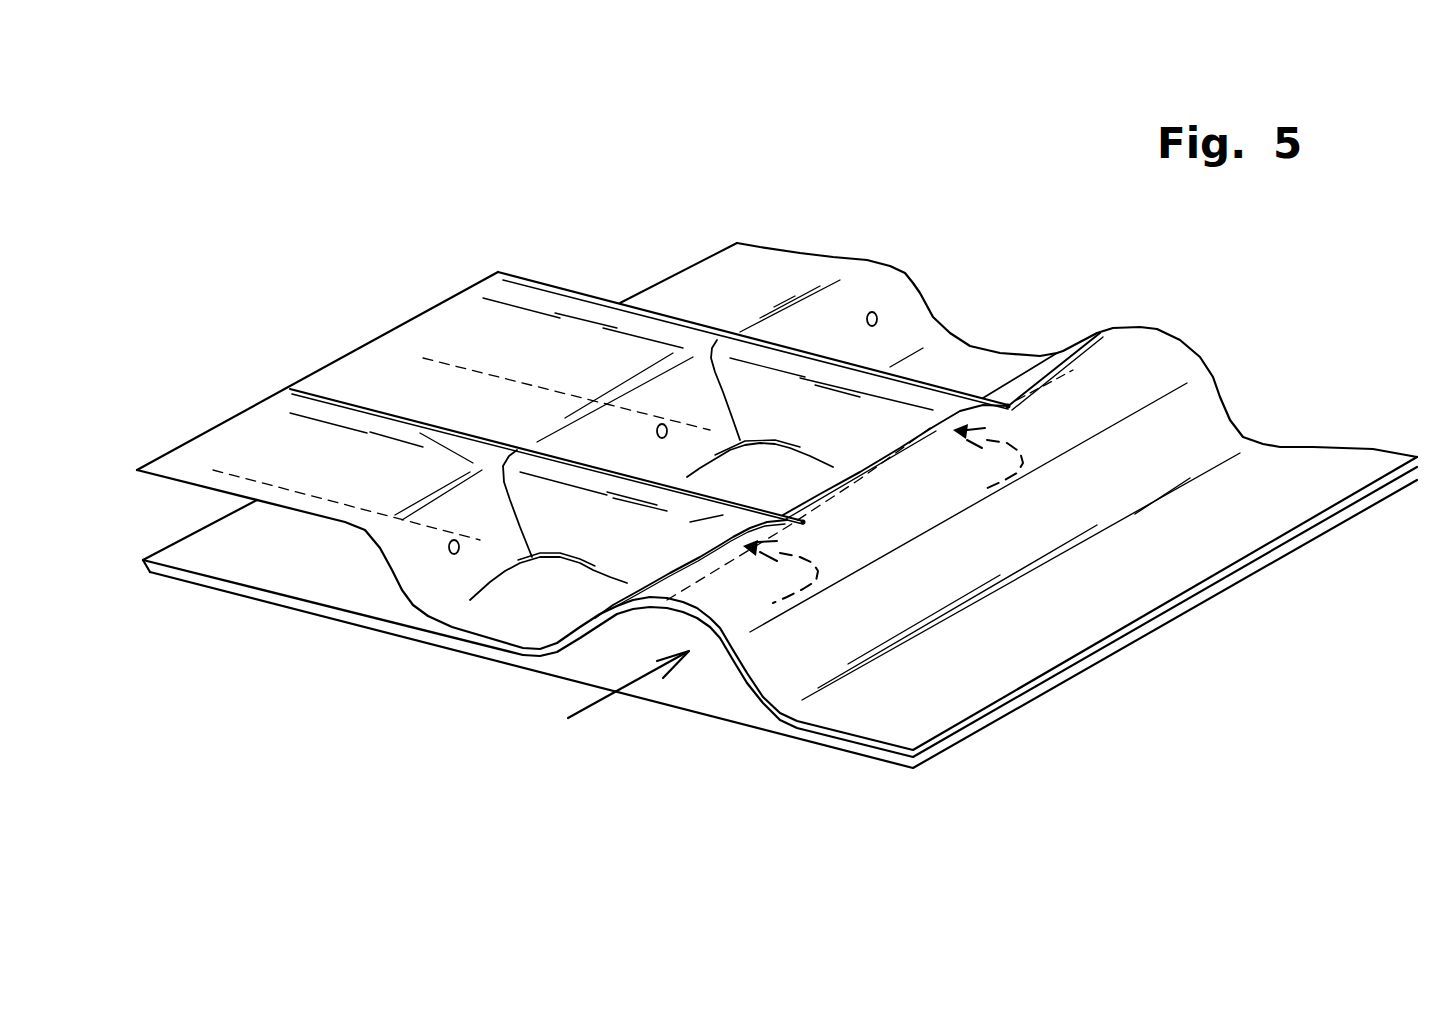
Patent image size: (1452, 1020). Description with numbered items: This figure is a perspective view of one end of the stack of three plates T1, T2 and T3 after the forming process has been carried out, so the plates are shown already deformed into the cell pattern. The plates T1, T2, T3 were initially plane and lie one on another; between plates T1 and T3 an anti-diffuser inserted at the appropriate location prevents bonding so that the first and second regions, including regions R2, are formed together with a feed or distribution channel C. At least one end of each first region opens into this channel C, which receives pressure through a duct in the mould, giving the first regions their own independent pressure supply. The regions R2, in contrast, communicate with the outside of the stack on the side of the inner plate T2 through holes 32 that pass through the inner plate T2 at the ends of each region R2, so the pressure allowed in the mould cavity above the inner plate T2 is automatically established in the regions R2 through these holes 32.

The plate T1 is at (783, 647).
The inner plate T2 is at (777, 500).
The plate T3 is at (333, 640).
The region R2 is at (201, 582).
The feed or distribution channel C is at (582, 684).
The holes 32 is at (668, 378).